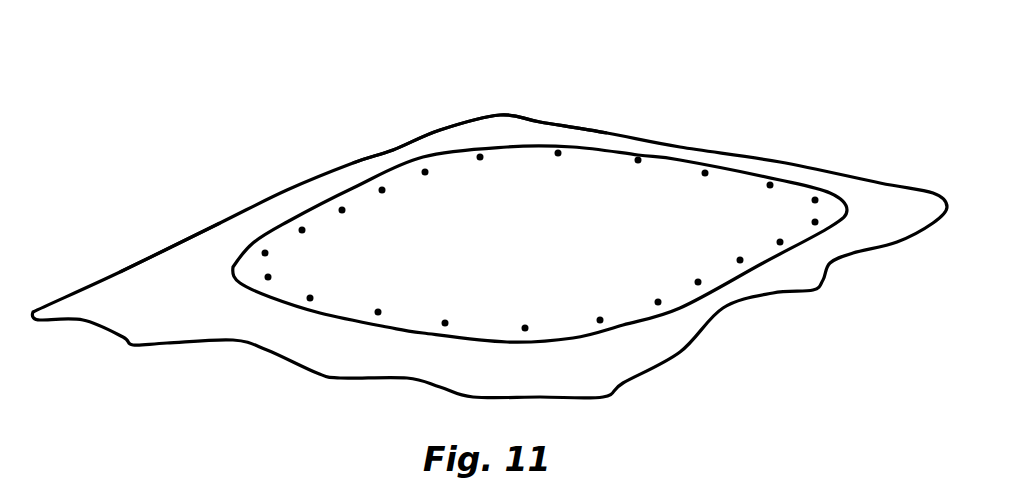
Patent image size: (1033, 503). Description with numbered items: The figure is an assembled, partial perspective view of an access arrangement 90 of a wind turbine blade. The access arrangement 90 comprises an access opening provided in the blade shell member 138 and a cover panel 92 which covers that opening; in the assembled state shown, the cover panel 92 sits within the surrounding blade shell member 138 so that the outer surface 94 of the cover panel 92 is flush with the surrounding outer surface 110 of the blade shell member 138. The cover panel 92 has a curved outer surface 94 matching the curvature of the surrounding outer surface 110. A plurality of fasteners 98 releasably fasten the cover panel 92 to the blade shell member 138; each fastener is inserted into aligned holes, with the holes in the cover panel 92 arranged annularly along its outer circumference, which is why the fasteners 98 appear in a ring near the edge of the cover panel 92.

The access arrangement 90 is at (278, 160).
The blade shell member 138 is at (482, 133).
The outer surface of the blade shell member 110 is at (195, 304).
The cover panel 92 is at (593, 182).
The outer surface of the cover panel 94 is at (530, 251).
The fasteners 98 is at (772, 182).